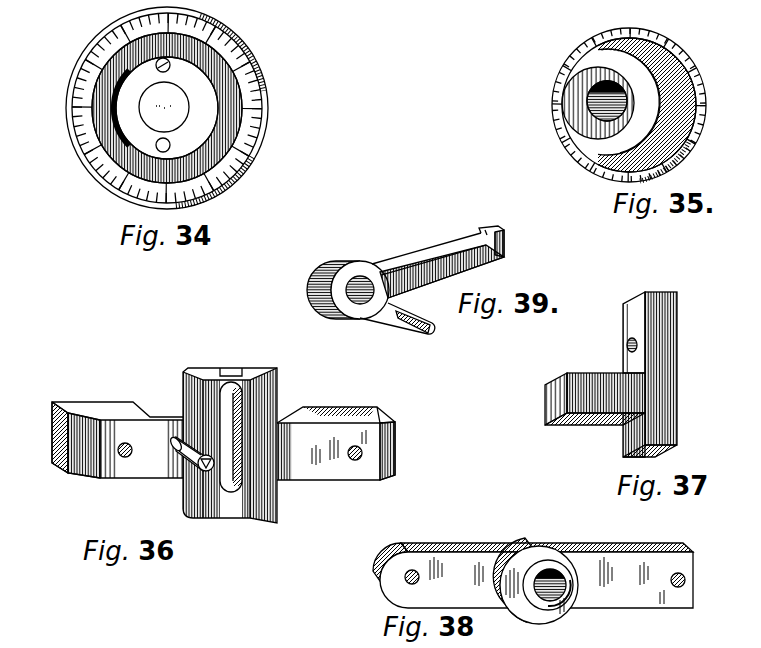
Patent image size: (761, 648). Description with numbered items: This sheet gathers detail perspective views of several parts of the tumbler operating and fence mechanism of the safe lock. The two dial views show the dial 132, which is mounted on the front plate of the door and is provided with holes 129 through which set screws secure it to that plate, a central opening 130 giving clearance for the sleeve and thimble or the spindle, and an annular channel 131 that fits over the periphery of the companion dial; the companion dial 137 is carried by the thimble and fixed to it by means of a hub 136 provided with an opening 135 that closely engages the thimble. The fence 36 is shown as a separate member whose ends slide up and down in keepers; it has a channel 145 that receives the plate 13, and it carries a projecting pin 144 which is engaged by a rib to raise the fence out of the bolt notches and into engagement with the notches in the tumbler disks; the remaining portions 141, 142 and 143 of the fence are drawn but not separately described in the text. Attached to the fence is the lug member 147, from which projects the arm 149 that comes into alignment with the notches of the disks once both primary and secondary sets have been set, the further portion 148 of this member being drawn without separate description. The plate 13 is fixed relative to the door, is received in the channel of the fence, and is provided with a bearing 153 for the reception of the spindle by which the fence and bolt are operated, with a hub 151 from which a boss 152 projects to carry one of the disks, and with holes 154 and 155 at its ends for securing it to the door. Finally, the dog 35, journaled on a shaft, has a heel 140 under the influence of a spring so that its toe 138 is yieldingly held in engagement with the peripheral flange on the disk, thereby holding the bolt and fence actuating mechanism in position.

In FIG. 34, the holes 129 is at (160, 63).
In FIG. 34, the central opening 130 is at (160, 92).
In FIG. 34, the annular channel 131 is at (133, 162).
In FIG. 34, the dial 132 is at (233, 95).
In FIG. 35, the opening 135 is at (602, 102).
In FIG. 35, the hub 136 is at (672, 157).
In FIG. 35, the dial 137 is at (698, 68).
In FIG. 39, the dog 35 is at (396, 260).
In FIG. 39, the toe 138 is at (494, 231).
In FIG. 39, the heel 140 is at (413, 335).
In FIG. 36, the slot 141 is at (225, 415).
In FIG. 36, the right arm shoulder 142 is at (295, 413).
In FIG. 36, the left arm 143 is at (95, 470).
In FIG. 36, the projecting pin 144 is at (177, 468).
In FIG. 36, the fence 36 is at (337, 468).
In FIG. 36, the channel 145 is at (252, 502).
In FIG. 37, the member 147 is at (622, 347).
In FIG. 37, the vertical bar 148 is at (672, 355).
In FIG. 37, the arm 149 is at (605, 402).
In FIG. 38, the hub 151 is at (503, 550).
In FIG. 38, the boss 152 is at (547, 565).
In FIG. 38, the bearing 153 is at (560, 575).
In FIG. 38, the plate 13 is at (628, 542).
In FIG. 38, the hole 155 is at (688, 580).
In FIG. 38, the hole 154 is at (410, 580).